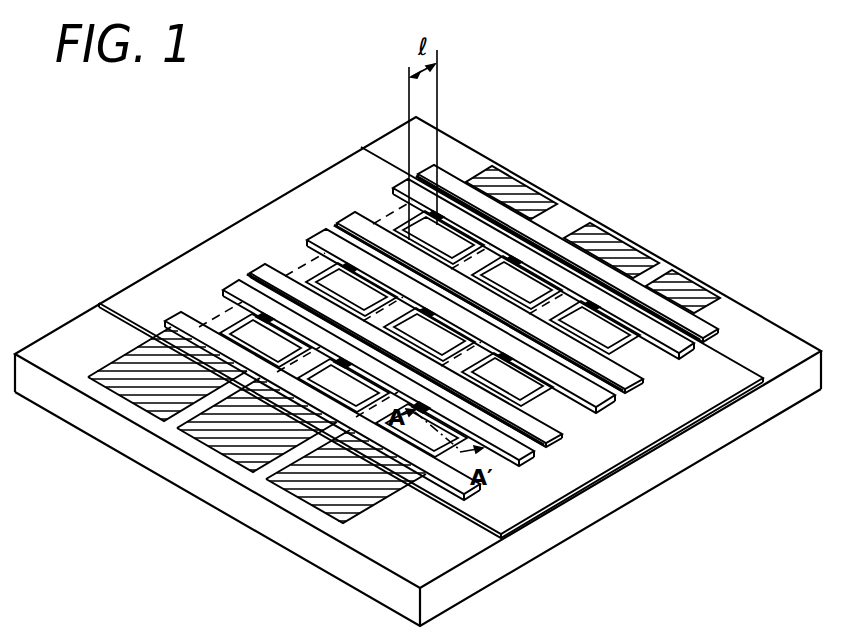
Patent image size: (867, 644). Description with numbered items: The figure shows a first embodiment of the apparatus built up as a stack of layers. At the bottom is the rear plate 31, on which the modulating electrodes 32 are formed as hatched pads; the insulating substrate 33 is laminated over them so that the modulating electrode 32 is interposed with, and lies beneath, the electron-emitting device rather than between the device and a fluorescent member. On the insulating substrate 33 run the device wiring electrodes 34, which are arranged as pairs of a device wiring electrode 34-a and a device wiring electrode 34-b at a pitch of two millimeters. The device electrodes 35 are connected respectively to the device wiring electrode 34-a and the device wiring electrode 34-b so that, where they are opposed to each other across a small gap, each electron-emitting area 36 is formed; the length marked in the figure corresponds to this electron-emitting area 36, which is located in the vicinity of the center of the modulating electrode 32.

The rear plate 31 is at (690, 457).
The modulating electrode 32 is at (680, 287).
The insulating substrate 33 is at (712, 401).
The device wiring electrode 34 is at (292, 103).
The device wiring electrode 34-a is at (400, 181).
The device wiring electrode 34-b is at (341, 214).
The device electrode 35 is at (505, 262).
The electron-emitting area 36 is at (603, 318).